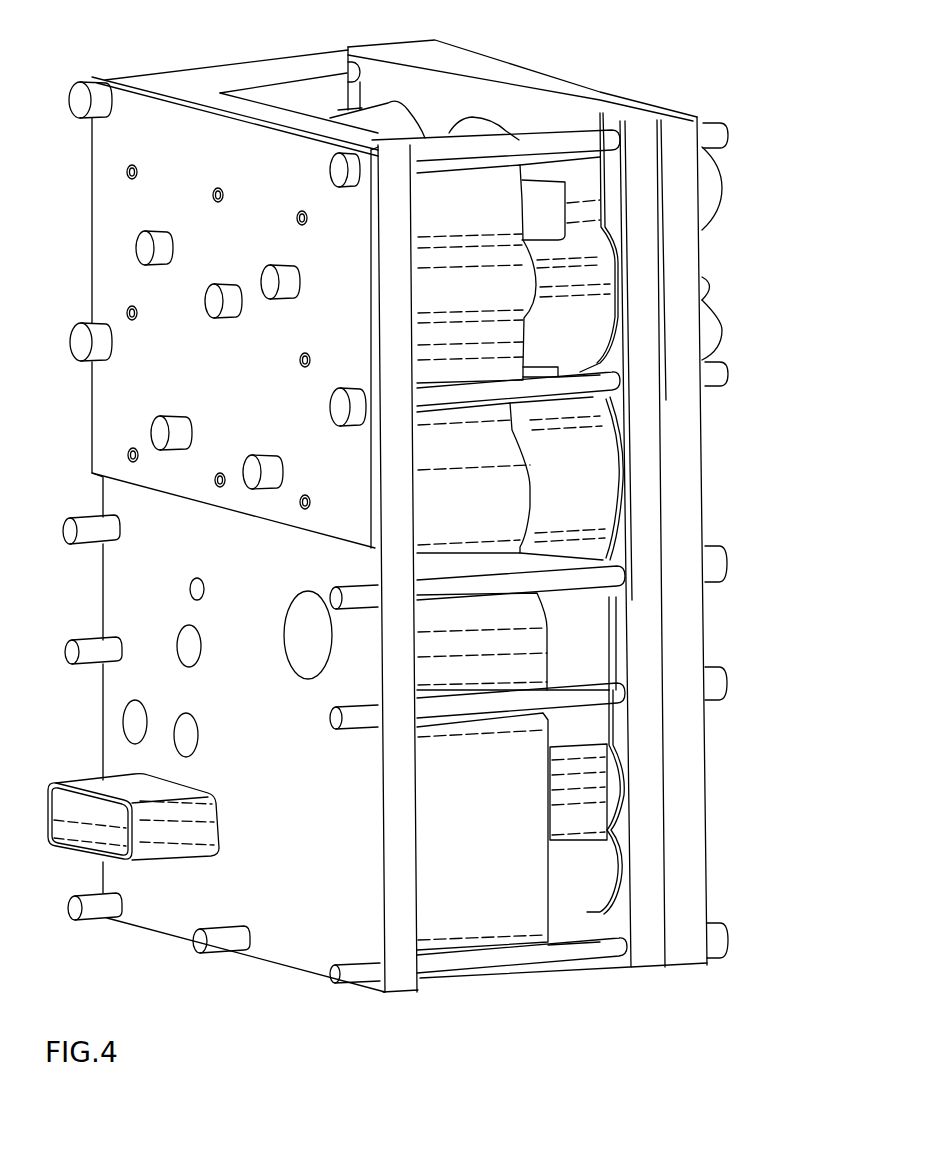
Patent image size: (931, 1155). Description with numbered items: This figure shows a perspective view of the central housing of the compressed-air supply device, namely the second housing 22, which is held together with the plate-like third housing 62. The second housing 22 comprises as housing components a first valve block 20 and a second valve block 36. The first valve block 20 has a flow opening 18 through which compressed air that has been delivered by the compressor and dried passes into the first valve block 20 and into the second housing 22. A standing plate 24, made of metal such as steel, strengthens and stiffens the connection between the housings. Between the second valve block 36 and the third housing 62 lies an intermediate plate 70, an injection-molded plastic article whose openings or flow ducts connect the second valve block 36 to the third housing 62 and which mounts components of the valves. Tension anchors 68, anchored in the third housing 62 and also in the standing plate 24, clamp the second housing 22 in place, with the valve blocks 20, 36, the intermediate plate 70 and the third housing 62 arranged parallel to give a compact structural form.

The flow opening 18 is at (322, 632).
The first valve block 20 is at (305, 945).
The second housing 22 is at (663, 973).
The standing plate 24 is at (105, 163).
The second valve block 36 is at (470, 200).
The third housing 62 is at (683, 264).
The tension anchors 68 is at (712, 128).
The intermediate plate 70 is at (638, 145).